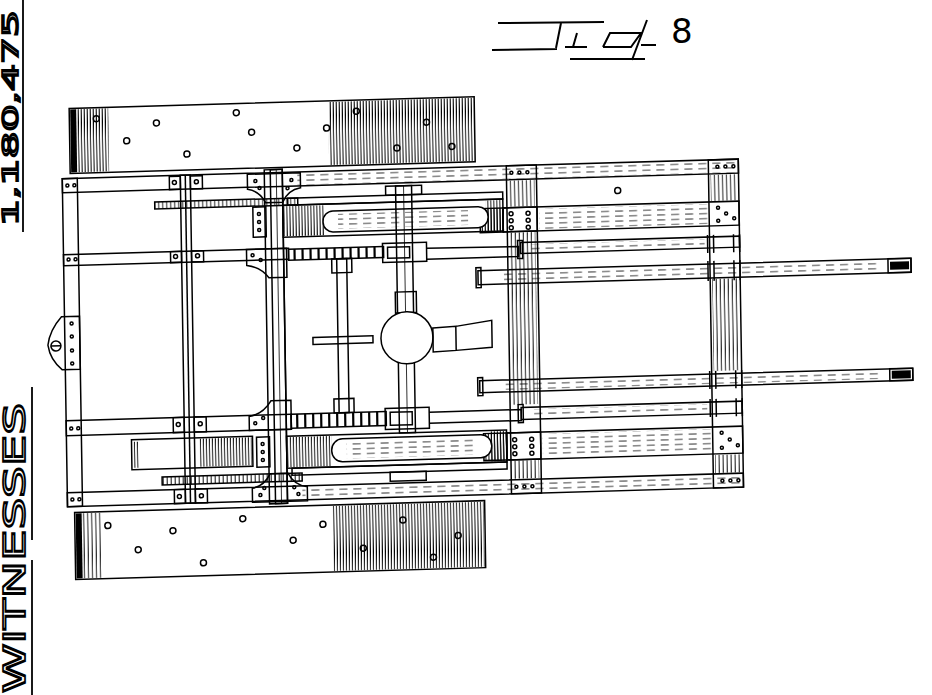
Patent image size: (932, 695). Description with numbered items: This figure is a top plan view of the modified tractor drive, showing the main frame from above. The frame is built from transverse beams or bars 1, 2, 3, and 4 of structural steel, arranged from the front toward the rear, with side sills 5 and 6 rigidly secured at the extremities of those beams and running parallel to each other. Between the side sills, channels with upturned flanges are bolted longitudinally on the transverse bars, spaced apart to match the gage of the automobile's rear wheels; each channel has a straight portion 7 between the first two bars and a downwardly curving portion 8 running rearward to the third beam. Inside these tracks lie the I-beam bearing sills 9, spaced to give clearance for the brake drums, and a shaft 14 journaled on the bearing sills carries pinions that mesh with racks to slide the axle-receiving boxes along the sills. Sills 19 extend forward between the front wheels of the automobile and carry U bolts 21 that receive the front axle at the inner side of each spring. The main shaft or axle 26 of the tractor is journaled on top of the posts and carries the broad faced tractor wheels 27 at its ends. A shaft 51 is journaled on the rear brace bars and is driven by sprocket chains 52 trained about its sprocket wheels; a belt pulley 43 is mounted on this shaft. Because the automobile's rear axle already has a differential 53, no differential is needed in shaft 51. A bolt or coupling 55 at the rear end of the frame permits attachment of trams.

The transverse beam 1 is at (744, 467).
The transverse beam 2 is at (548, 474).
The transverse beam 3 is at (266, 330).
The transverse beam 4 is at (78, 397).
The side sill 5 is at (582, 168).
The side sill 6 is at (594, 488).
The straight portion of channel track 7 is at (652, 208).
The downwardly curving channel portion 8 is at (499, 210).
The bearing sill 9 is at (672, 252).
The shaft 14 is at (338, 368).
The sill 19 is at (604, 283).
The U bolt 21 is at (900, 262).
The main shaft or axle 26 is at (284, 297).
The tractor wheel 27 is at (345, 120).
The belt pulley 43 is at (148, 450).
The shaft 51 is at (183, 316).
The sprocket chain 52 is at (240, 188).
The differential 53 is at (419, 345).
The coupling 55 is at (50, 322).